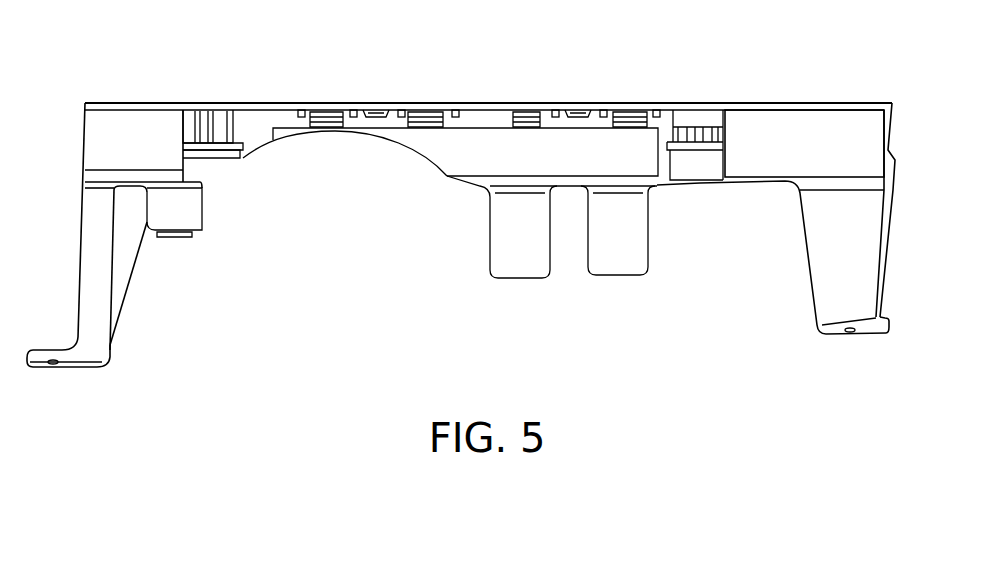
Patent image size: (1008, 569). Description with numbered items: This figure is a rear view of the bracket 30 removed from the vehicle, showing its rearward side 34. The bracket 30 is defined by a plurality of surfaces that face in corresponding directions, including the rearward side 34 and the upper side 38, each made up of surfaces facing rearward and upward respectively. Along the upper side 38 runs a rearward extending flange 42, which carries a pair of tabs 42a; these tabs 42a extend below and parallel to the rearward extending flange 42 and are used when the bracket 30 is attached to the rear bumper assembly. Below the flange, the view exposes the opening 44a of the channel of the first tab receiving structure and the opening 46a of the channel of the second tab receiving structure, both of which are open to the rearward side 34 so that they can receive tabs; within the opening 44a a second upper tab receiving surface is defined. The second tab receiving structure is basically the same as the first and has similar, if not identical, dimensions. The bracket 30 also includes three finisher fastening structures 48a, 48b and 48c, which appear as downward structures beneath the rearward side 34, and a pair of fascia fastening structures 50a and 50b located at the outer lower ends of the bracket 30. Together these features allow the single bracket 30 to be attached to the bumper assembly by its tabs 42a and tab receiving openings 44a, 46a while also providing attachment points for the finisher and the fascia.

The bracket 30 is at (230, 35).
The upper side 38 is at (795, 101).
The rearward extending flange 42 is at (631, 101).
The tabs 42a is at (374, 117).
The rearward side 34 is at (448, 148).
The opening 46a is at (227, 152).
The opening 44a is at (695, 152).
The finisher fastening structure 48a is at (620, 263).
The finisher fastening structure 48b is at (518, 267).
The finisher fastening structure 48c is at (185, 217).
The fascia fastening structure 50a is at (833, 332).
The fascia fastening structure 50b is at (77, 362).